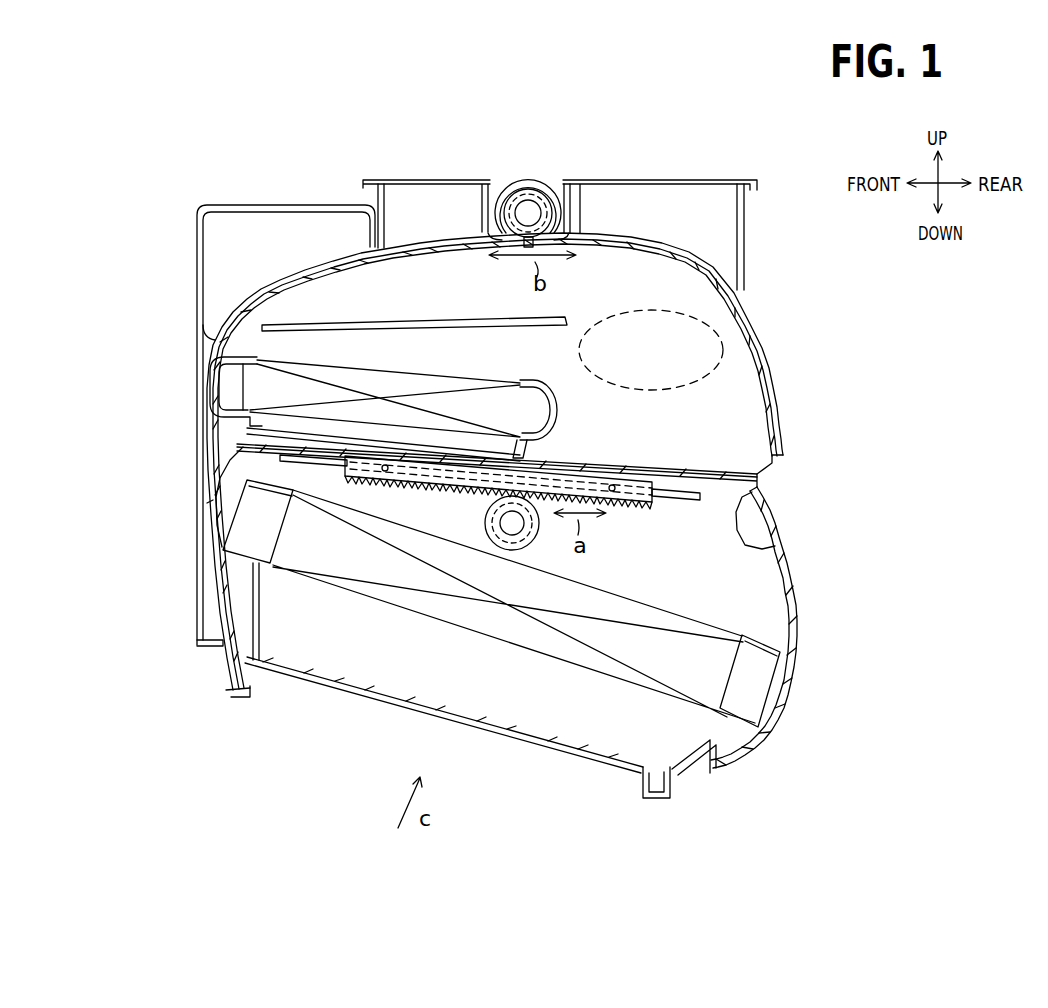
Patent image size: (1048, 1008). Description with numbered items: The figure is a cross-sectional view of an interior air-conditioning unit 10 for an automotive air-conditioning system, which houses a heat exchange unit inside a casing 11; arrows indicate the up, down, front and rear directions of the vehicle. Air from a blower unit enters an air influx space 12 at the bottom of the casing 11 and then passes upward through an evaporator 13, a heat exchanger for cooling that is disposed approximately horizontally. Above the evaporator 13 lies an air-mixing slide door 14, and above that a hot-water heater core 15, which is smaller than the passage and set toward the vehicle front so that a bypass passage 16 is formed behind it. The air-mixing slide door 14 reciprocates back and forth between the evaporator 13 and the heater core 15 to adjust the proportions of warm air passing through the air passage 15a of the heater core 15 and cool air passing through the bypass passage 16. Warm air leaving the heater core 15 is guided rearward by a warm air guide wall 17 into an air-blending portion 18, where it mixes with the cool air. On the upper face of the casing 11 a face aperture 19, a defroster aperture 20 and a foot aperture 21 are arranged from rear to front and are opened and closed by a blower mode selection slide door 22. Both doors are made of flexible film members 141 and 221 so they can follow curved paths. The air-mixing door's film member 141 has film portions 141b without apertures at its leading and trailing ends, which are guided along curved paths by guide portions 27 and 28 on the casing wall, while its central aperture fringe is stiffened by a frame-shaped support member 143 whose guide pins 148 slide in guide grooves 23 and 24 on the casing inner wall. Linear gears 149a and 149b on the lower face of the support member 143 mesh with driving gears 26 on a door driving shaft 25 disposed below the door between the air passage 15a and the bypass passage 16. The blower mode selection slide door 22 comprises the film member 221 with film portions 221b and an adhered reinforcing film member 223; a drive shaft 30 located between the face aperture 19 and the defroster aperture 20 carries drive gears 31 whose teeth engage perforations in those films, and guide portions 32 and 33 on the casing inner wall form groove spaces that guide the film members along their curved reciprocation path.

The air-conditioning unit 10 is at (772, 336).
The casing 11 is at (742, 310).
The air influx space 12 is at (417, 660).
The evaporator 13 is at (473, 617).
The air-mixing slide door 14 is at (660, 514).
The heater core 15 is at (287, 383).
The air passage 15a is at (380, 428).
The bypass passage 16 is at (650, 447).
The warm air guide wall 17 is at (313, 320).
The air-blending portion 18 is at (715, 295).
The face aperture 19 is at (693, 188).
The defroster aperture 20 is at (407, 190).
The foot aperture 21 is at (268, 235).
The blower mode selection slide door 22 is at (433, 237).
The film member 221 is at (474, 165).
The reinforcing film member 223 is at (534, 165).
The film portions 221b is at (240, 417).
The guide groove 23 is at (645, 492).
The guide groove 24 is at (614, 482).
The door driving shaft 25 is at (512, 530).
The driving gears 26 is at (500, 548).
The guide portion 27 is at (233, 515).
The guide portion 28 is at (207, 503).
The drive shaft 30 is at (531, 205).
The drive gears 31 is at (515, 205).
The guide portion 32 is at (380, 198).
The guide portion 33 is at (402, 256).
The film member 141 is at (695, 477).
The film portions 141b is at (240, 448).
The support member 143 is at (383, 483).
The guide pins 148 is at (333, 478).
The linear gear 149a is at (257, 570).
The linear gear 149b is at (185, 606).